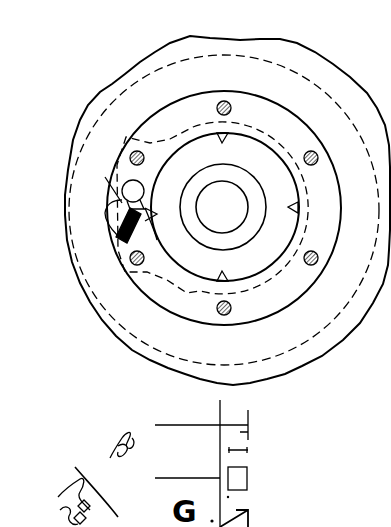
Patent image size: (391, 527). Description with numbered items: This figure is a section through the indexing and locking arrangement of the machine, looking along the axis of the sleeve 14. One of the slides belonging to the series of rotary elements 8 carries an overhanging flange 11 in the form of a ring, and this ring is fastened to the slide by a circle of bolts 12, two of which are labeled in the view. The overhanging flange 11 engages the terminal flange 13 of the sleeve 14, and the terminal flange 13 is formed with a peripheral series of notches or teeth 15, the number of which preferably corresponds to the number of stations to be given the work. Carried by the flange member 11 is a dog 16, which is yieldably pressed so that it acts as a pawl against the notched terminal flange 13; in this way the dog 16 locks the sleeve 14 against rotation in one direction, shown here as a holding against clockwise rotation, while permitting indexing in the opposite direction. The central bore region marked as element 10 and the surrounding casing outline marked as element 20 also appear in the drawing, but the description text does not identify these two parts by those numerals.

The rotary elements 8 is at (99, 196).
The shaft bore 10 is at (199, 214).
The overhanging flange 11 is at (90, 167).
The bolts 12 is at (313, 152).
The terminal flange 13 is at (263, 270).
The sleeve 14 is at (226, 314).
The notches or teeth 15 is at (290, 202).
The dog 16 is at (156, 219).
The casing 20 is at (277, 367).